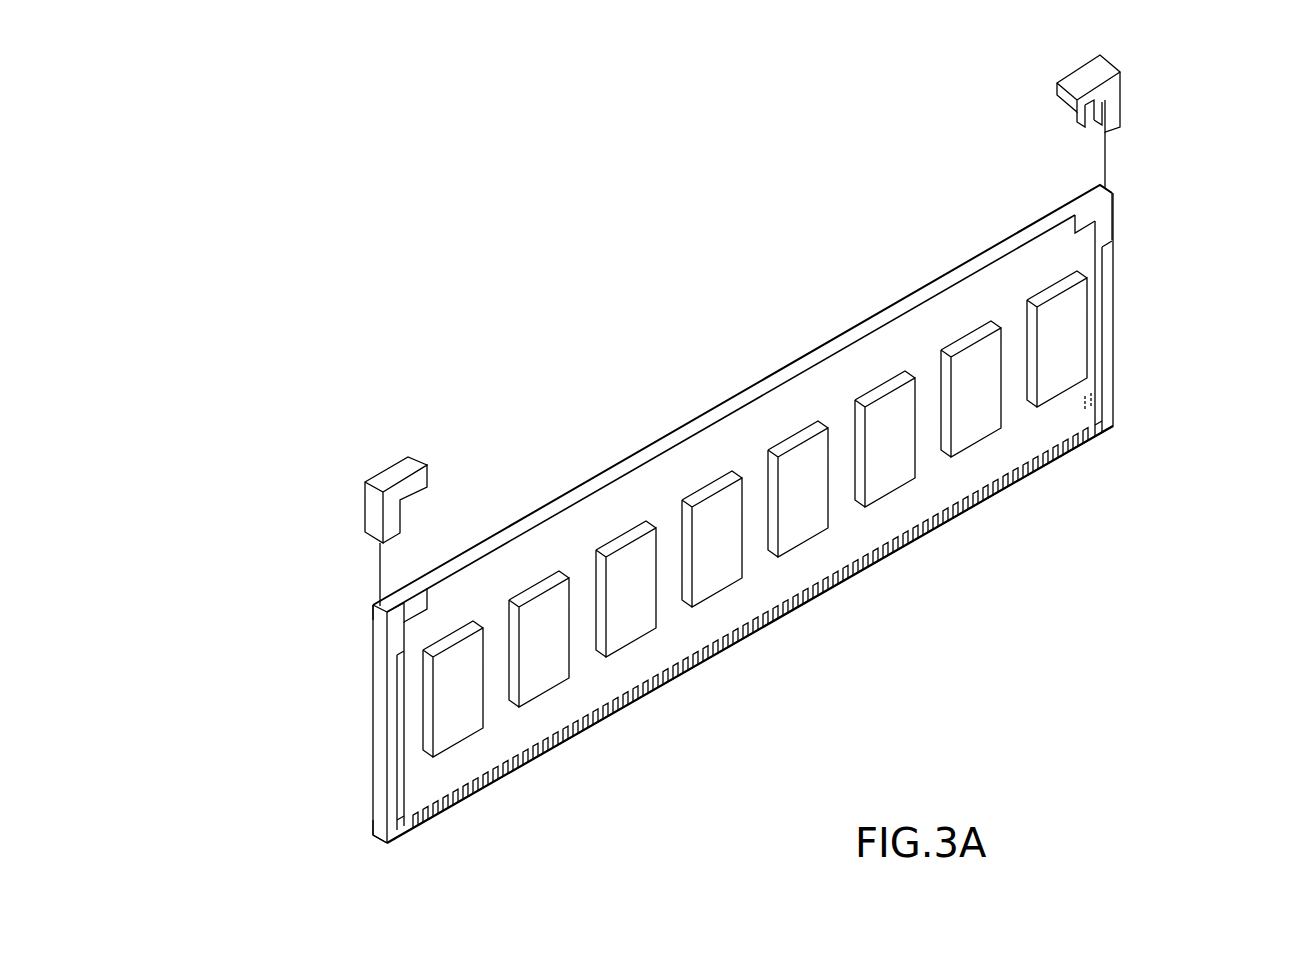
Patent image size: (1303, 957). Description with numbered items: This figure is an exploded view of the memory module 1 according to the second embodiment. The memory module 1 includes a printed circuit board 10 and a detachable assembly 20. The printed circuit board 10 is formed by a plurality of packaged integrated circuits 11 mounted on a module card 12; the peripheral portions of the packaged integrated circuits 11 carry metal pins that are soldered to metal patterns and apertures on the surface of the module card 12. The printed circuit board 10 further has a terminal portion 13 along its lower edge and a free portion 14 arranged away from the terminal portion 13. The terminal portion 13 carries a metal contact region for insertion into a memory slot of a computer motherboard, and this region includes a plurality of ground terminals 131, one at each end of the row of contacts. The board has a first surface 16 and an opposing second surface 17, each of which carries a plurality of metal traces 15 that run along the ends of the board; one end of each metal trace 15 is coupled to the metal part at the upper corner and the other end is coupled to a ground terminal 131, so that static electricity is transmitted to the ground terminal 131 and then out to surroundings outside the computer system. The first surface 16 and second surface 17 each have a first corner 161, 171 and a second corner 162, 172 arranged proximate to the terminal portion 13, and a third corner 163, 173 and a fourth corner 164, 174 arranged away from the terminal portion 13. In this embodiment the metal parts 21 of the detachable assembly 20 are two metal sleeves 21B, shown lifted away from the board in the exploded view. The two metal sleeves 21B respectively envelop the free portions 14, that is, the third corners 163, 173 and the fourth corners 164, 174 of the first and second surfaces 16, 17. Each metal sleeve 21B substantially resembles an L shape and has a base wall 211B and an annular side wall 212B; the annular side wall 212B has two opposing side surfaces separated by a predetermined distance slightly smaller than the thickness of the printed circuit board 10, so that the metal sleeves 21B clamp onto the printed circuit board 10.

The memory module 1 is at (654, 438).
The printed circuit board 10 is at (755, 514).
The packaged integrated circuits 11 is at (792, 445).
The module card 12 is at (823, 403).
The terminal portion 13 is at (797, 640).
The ground terminals 131 is at (407, 827).
The free portion 14 is at (852, 322).
The metal traces 15 is at (1100, 304).
The first surface 16 is at (593, 518).
The second surface 17 is at (517, 553).
The first corner 161 is at (408, 865).
The second corner 162 is at (1122, 427).
The third corner 163 is at (380, 641).
The fourth corner 164 is at (1122, 206).
The first corner 171 is at (362, 827).
The second corner 172 is at (1093, 394).
The third corner 173 is at (362, 606).
The fourth corner 174 is at (1070, 211).
The detachable assembly 20 is at (734, 319).
The metal parts 21 is at (760, 319).
The metal sleeves 21B is at (783, 319).
The base wall 211B is at (1078, 70).
The annular side wall 212B is at (1116, 108).